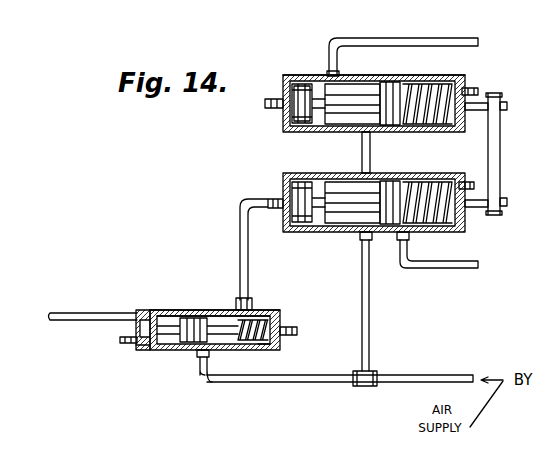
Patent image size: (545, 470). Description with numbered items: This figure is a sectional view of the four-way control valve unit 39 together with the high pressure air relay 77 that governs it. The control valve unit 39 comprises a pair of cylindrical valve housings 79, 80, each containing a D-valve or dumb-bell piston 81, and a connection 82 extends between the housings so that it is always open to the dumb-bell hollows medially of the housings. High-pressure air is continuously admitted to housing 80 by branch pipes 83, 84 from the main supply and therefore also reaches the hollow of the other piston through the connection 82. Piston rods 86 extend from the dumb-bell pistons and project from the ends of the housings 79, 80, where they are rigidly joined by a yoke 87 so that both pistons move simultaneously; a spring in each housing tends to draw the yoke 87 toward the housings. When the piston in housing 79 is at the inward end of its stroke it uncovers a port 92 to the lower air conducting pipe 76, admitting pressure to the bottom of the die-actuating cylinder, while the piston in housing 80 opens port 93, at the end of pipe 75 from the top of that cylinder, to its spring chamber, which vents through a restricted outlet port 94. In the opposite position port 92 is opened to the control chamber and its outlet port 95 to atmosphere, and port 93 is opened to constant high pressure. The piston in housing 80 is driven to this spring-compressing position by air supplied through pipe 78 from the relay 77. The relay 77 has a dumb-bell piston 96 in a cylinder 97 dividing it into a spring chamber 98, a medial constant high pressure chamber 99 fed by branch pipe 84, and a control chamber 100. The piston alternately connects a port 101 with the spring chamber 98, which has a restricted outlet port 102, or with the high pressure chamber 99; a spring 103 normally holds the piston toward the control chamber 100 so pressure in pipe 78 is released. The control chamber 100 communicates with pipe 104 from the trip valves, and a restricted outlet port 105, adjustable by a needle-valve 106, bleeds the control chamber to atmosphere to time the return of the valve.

The four-way control valve unit 39 is at (303, 64).
The air conducting pipe 75 is at (479, 270).
The lower air conducting pipe 76 is at (433, 39).
The high pressure air relay 77 is at (183, 306).
The pipe 78 is at (240, 205).
The valve housing 79 is at (283, 120).
The valve housing 80 is at (283, 176).
The dumb-bell piston 81 is at (316, 132).
The connection 82 is at (362, 152).
The branch pipe 83 is at (371, 313).
The branch pipe 84 is at (346, 383).
The piston rod 86 is at (508, 106).
The yoke 87 is at (503, 152).
The port 92 is at (341, 74).
The port 93 is at (399, 240).
The restricted outlet port 94 is at (480, 90).
The outlet port 95 is at (265, 102).
The dumb-bell piston 96 is at (175, 352).
The cylinder 97 is at (185, 308).
The spring chamber 98 is at (272, 350).
The constant high pressure chamber 99 is at (240, 297).
The control chamber 100 is at (150, 310).
The port 101 is at (201, 317).
The restricted outlet port 102 is at (298, 333).
The spring 103 is at (262, 351).
The pipe 104 is at (80, 317).
The restricted outlet port 105 is at (147, 350).
The needle-valve 106 is at (123, 342).